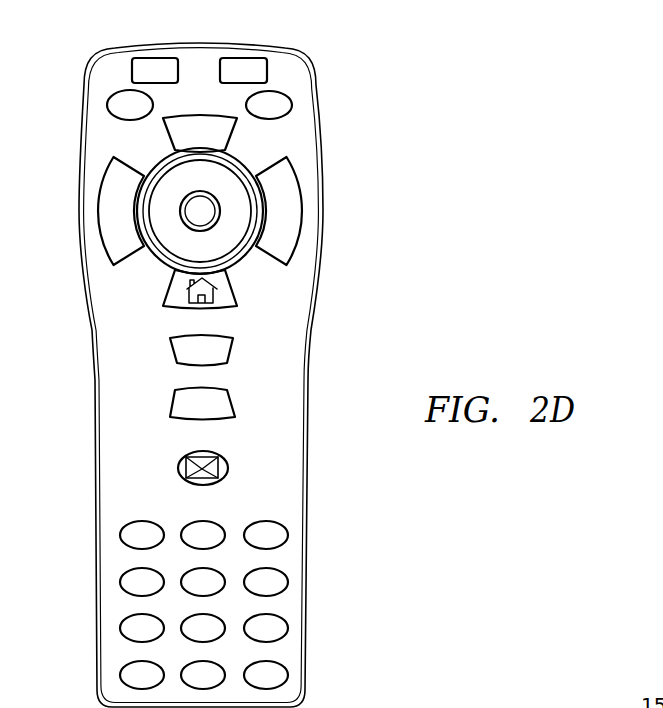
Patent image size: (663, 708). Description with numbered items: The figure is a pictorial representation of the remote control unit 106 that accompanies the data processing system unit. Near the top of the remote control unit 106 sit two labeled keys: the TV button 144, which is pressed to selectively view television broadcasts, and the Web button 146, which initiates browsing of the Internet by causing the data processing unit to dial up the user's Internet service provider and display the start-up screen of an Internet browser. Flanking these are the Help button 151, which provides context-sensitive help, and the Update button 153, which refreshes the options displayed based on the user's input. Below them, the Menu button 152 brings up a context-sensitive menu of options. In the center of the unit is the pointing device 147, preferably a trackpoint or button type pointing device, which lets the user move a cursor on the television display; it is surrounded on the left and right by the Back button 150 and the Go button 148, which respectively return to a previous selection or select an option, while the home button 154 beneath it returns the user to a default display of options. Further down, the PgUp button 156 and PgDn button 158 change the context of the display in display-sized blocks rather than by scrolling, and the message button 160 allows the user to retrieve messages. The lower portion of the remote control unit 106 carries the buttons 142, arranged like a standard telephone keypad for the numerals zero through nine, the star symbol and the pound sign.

The remote control unit 106 is at (311, 427).
The buttons 142 is at (325, 522).
The TV button 144 is at (158, 58).
The Web button 146 is at (243, 58).
The pointing device 147 is at (212, 193).
The Go button 148 is at (303, 211).
The Back button 150 is at (100, 212).
The Help button 151 is at (108, 106).
The Menu button 152 is at (175, 116).
The Update button 153 is at (292, 106).
The home button 154 is at (170, 284).
The PgUp button 156 is at (229, 353).
The PgDn button 158 is at (176, 402).
The message button 160 is at (178, 467).